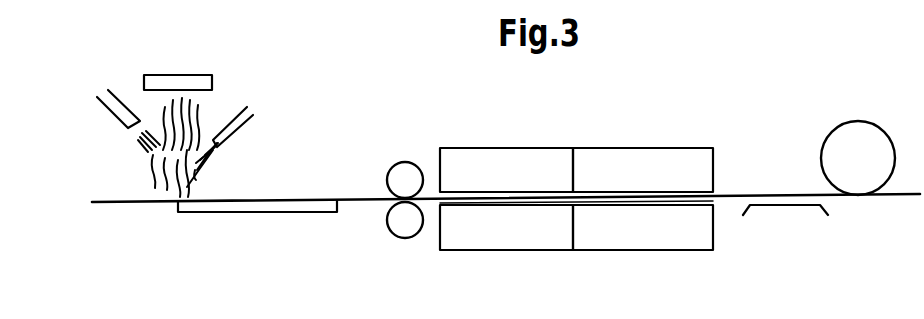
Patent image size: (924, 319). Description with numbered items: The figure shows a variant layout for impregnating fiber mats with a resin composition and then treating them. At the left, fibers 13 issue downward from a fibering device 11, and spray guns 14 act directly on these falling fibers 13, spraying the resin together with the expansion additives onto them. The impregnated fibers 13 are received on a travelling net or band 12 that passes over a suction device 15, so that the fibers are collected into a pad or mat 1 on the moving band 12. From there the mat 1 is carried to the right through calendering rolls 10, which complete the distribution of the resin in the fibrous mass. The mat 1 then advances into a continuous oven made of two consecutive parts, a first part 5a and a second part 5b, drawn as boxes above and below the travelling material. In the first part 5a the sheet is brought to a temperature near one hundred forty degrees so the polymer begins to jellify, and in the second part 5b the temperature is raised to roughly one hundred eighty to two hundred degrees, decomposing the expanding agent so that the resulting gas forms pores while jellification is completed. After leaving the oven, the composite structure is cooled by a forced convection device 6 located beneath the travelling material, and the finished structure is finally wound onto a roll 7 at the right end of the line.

The pad or mat 1 is at (366, 199).
The first part of oven 5a is at (495, 215).
The second part of drying chamber 5b is at (615, 212).
The forced convection device 6 is at (798, 205).
The roll 7 is at (862, 136).
The calendering rolls 10 is at (386, 204).
The fibering device 11 is at (189, 82).
The travelling net or band 12 is at (138, 205).
The fibers 13 is at (200, 123).
The spray guns 14 is at (243, 112).
The suction device 15 is at (272, 210).